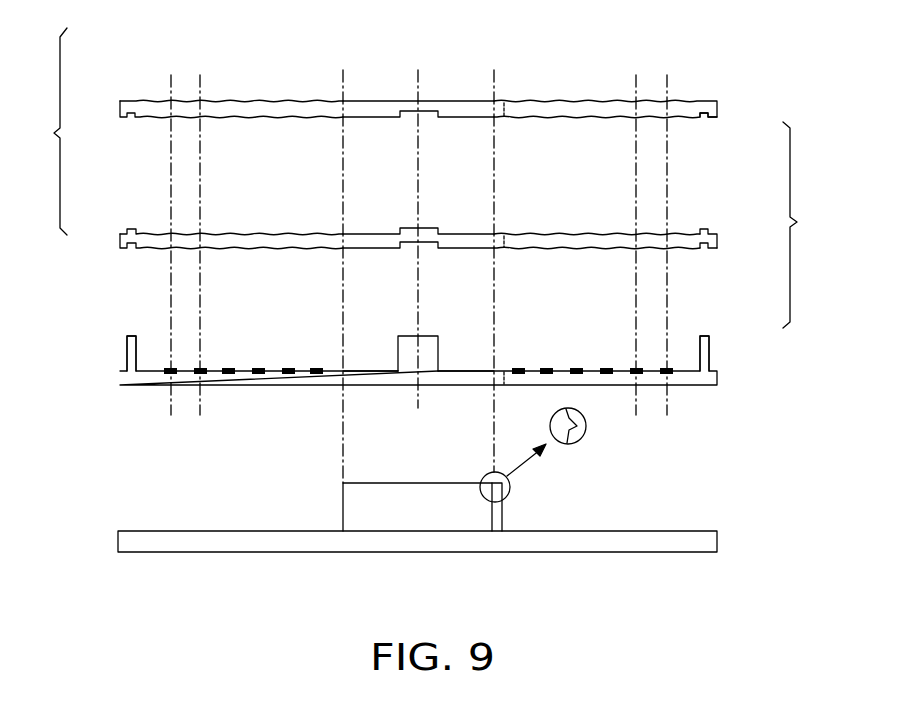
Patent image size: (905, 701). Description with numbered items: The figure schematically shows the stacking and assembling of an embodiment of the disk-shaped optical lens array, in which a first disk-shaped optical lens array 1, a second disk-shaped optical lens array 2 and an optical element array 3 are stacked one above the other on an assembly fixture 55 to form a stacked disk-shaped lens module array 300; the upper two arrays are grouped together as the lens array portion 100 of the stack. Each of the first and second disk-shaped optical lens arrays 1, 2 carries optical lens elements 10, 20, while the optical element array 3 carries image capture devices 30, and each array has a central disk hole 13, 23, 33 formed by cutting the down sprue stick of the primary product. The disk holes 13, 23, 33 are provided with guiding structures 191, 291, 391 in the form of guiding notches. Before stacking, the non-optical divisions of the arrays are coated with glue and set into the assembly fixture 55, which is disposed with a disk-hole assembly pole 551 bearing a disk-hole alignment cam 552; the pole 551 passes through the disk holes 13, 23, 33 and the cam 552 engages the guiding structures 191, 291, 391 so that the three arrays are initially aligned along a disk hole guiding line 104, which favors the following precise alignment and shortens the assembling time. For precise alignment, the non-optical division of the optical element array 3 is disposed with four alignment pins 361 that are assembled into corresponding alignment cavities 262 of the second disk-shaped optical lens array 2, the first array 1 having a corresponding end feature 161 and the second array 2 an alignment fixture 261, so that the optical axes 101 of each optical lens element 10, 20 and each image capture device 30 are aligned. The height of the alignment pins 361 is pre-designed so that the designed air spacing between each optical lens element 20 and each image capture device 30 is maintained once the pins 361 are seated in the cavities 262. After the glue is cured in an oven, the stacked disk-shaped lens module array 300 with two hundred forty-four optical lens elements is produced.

The light source module 100 is at (40, 131).
The stacked disk-shaped lens module array 300 is at (811, 225).
The first disk-shaped optical lens array 1 is at (120, 101).
The second disk-shaped optical lens array 2 is at (120, 234).
The optical element array 3 is at (120, 371).
The optical lens element 10 is at (256, 100).
The disk hole 13 is at (385, 100).
The optical lens element 20 is at (256, 233).
The disk hole 23 is at (385, 233).
The image capture device 30 is at (260, 370).
The disk hole 33 is at (385, 370).
The optical axis 101 is at (171, 408).
The disk hole guiding line 104 is at (343, 100).
The first positioning notch 161 is at (707, 117).
The guiding structure 191 is at (500, 117).
The alignment fixture 261 is at (707, 229).
The alignment cavity 262 is at (707, 249).
The guiding structure 291 is at (500, 249).
The alignment pin 361 is at (425, 336).
The guiding structure 391 is at (500, 371).
The assembly fixture 55 is at (120, 540).
The disk-hole assembly pole 551 is at (343, 503).
The disk-hole alignment cam 552 is at (570, 445).